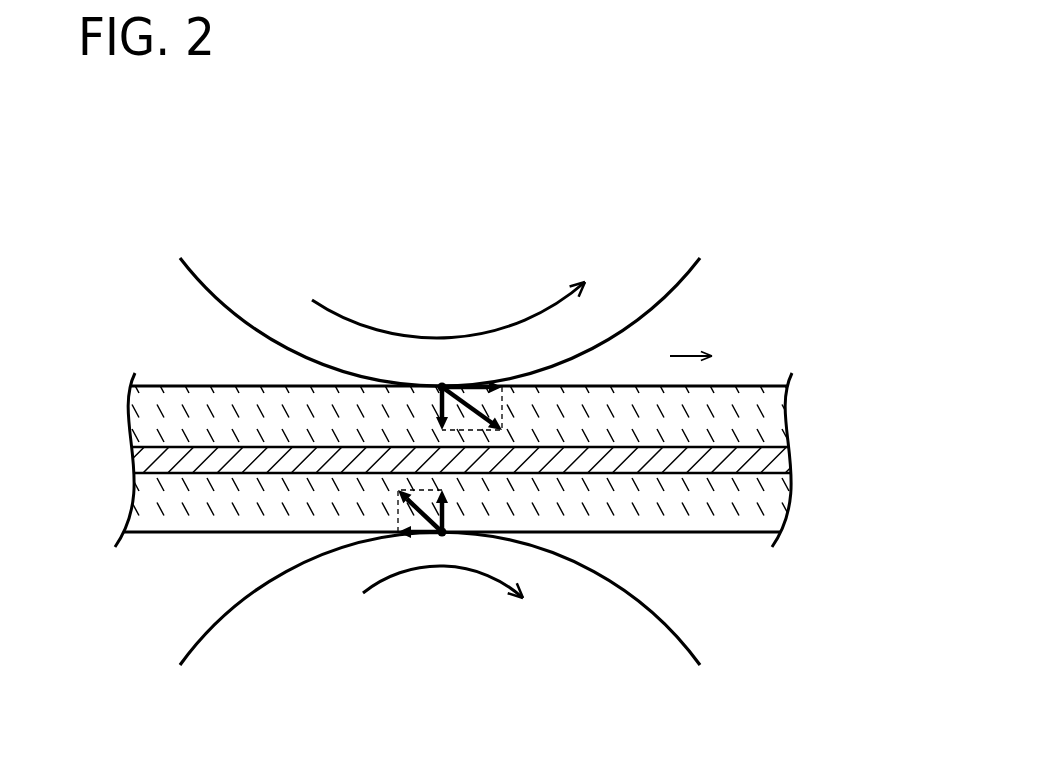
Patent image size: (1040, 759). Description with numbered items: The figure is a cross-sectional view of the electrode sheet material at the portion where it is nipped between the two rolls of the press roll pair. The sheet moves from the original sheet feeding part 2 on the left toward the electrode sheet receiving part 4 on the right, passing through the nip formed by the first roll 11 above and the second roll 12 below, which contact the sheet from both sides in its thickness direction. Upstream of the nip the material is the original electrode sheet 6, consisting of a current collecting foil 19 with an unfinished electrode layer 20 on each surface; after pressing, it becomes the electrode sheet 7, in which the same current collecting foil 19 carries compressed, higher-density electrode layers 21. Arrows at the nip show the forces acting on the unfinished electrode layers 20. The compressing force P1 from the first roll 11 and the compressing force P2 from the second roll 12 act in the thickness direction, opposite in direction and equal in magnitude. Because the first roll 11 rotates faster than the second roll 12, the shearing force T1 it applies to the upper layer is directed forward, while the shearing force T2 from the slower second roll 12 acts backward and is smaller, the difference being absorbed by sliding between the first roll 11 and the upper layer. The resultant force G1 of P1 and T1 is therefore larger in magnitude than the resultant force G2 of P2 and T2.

The original sheet feeding part 2 is at (108, 474).
The electrode sheet receiving part 4 is at (862, 476).
The original electrode sheet 6 is at (200, 369).
The electrode sheet 7 is at (662, 542).
The first roll 11 is at (470, 300).
The second roll 12 is at (472, 632).
The current collecting foil 19 is at (742, 458).
The unfinished electrode layer 20 is at (272, 503).
The electrode layer 21 is at (605, 505).
The compressing force P1 is at (441, 388).
The shearing force T1 is at (478, 383).
The resultant force G1 is at (470, 402).
The compressing force P2 is at (442, 512).
The shearing force T2 is at (424, 534).
The resultant force G2 is at (418, 513).